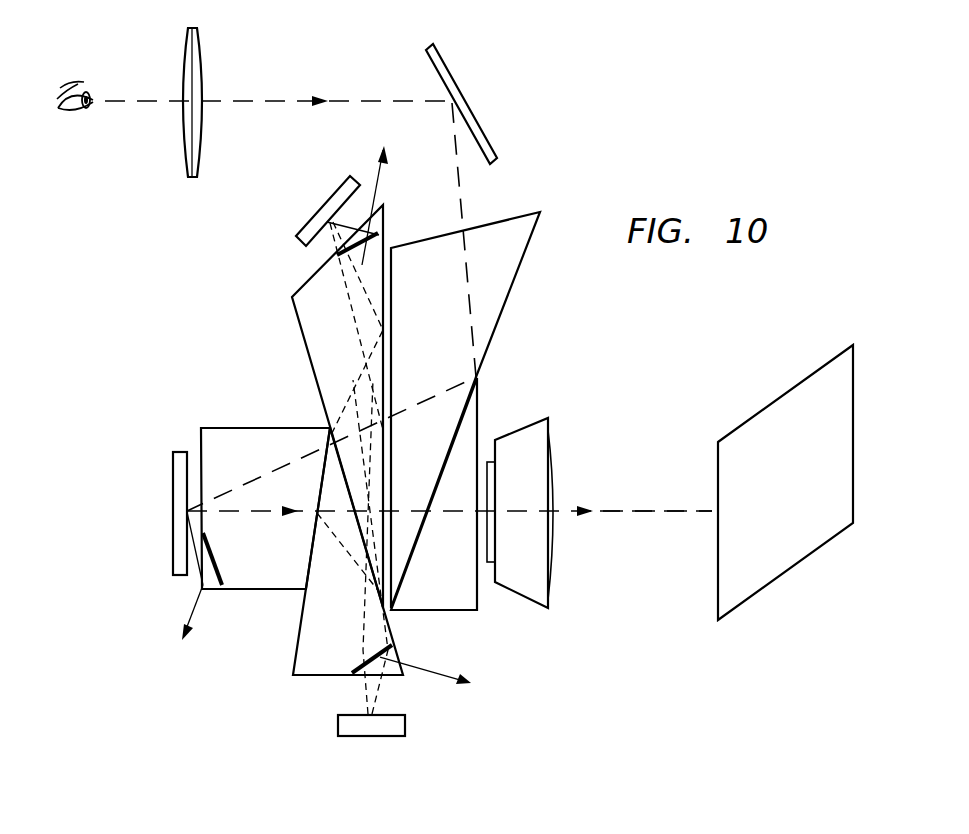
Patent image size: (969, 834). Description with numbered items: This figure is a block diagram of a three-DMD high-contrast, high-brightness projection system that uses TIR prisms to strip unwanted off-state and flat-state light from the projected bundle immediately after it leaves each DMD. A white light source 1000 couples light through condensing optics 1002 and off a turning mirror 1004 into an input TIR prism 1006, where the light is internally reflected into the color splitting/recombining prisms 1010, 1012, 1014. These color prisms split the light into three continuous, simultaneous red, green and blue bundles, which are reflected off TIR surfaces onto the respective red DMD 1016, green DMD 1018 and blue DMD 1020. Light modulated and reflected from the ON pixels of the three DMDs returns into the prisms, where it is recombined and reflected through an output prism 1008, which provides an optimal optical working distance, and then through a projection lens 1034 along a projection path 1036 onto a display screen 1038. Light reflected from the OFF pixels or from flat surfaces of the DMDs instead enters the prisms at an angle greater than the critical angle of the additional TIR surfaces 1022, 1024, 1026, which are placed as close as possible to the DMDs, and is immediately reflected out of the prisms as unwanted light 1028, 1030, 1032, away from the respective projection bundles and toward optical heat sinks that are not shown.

The white light source 1000 is at (77, 128).
The condensing optics 1002 is at (204, 50).
The turning mirror 1004 is at (448, 64).
The input TIR prism 1006 is at (514, 212).
The output prism 1008 is at (446, 614).
The color splitting/recombining prism 1010 is at (306, 598).
The color splitting/recombining prism 1012 is at (246, 427).
The color splitting/recombining prism 1014 is at (294, 316).
The red DMD 1016 is at (368, 737).
The green DMD 1018 is at (172, 498).
The blue DMD 1020 is at (324, 202).
The TIR surface 1022 is at (364, 664).
The TIR surface 1024 is at (218, 572).
The TIR surface 1026 is at (378, 240).
The unwanted light 1028 is at (446, 684).
The unwanted light 1030 is at (196, 594).
The unwanted light 1032 is at (380, 196).
The projection lens 1034 is at (522, 424).
The projection path 1036 is at (654, 514).
The display screen 1038 is at (788, 552).